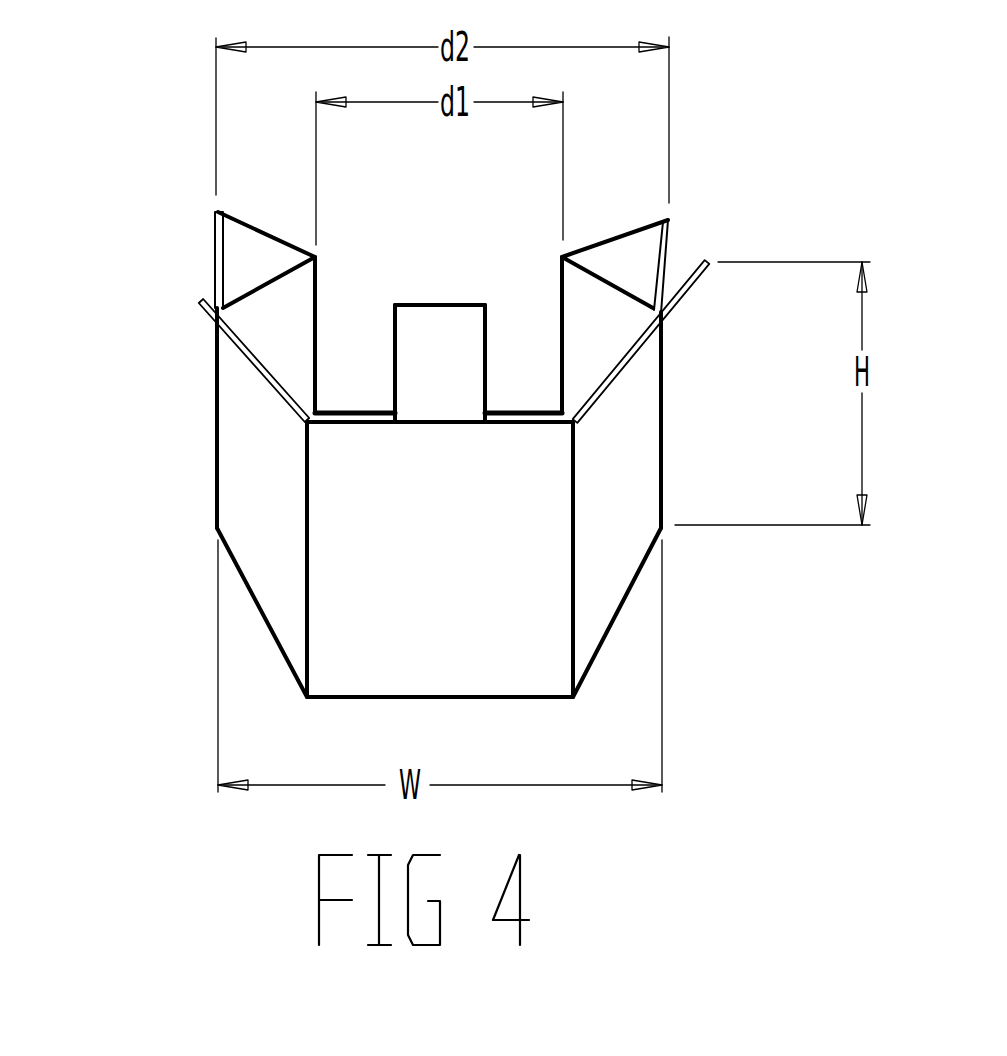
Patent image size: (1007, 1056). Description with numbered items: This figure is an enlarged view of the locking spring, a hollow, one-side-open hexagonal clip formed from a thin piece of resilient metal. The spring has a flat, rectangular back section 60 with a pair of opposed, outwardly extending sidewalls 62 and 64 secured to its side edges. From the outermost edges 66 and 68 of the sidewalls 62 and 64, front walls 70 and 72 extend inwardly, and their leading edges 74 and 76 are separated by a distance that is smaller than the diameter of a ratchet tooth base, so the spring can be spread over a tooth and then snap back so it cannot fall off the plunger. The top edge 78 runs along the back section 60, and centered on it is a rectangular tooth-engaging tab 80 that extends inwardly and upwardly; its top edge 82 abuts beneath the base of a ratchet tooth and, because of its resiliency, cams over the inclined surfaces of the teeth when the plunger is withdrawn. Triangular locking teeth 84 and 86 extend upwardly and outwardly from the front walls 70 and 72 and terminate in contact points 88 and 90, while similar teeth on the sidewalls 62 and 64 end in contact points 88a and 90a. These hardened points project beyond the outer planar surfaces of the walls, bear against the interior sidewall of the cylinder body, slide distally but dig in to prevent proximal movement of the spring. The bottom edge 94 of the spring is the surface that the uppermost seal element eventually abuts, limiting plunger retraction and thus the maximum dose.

The back section 60 is at (512, 580).
The sidewall 62 is at (262, 473).
The sidewall 64 is at (607, 523).
The outermost edge 66 is at (217, 415).
The outermost edge 68 is at (663, 440).
The front wall 70 is at (292, 353).
The front wall 72 is at (563, 350).
The leading edge 74 is at (318, 283).
The leading edge 76 is at (563, 297).
The top edge 78 is at (375, 414).
The tooth-engaging tab 80 is at (477, 382).
The top edge 82 is at (432, 303).
The locking tooth 84 is at (250, 265).
The locking tooth 86 is at (618, 263).
The contact point 88 is at (217, 210).
The contact point 88a is at (197, 302).
The contact point 90 is at (662, 215).
The contact point 90a is at (720, 260).
The bottom edge 94 is at (597, 668).